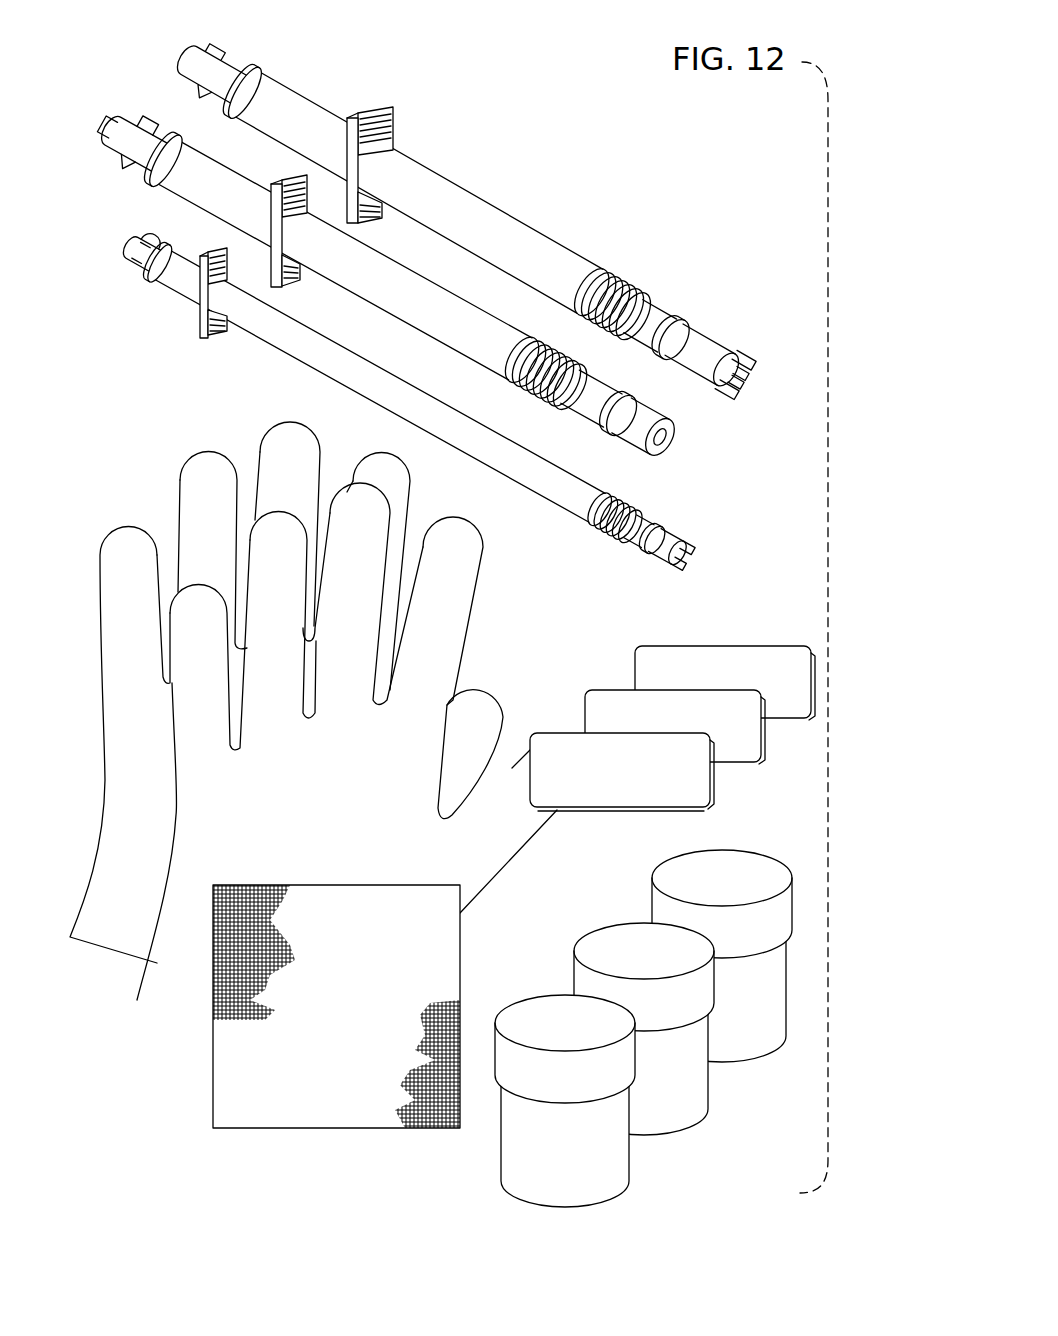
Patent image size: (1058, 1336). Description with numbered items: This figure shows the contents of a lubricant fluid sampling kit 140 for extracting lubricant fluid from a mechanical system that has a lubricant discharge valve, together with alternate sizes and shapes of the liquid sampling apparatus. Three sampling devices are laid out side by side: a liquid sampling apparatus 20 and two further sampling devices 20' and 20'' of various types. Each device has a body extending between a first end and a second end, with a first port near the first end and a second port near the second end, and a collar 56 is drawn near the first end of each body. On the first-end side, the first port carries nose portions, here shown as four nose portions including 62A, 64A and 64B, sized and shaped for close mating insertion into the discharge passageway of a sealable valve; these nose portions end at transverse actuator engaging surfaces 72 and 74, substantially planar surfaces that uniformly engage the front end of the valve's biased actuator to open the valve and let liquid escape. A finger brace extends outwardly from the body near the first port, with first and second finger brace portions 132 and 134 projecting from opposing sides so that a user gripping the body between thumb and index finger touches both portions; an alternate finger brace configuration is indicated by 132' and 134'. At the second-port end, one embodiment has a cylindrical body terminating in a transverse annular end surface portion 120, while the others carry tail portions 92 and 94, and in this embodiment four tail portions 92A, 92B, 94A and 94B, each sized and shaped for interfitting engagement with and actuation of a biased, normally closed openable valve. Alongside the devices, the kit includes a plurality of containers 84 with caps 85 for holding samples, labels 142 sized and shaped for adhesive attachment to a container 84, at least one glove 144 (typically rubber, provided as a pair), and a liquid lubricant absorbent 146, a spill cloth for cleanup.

The liquid sampling apparatus 20 is at (404, 400).
The liquid sampling apparatus (second type) 20' is at (383, 245).
The liquid sampling apparatus (third type) 20'' is at (457, 215).
The collar / hub 56 is at (217, 62).
The nose portion 62A is at (116, 160).
The nose portion 64A is at (118, 126).
The nose portion 64B is at (134, 110).
The transverse actuator engaging surface 72 is at (128, 263).
The transverse actuator engaging surface 74 is at (137, 241).
The container 84 is at (622, 1164).
The cap 85 is at (666, 877).
The tail portion 92 is at (685, 567).
The tail portion 92A is at (745, 387).
The tail portion 92B is at (758, 376).
The tail portion 94 is at (681, 542).
The tail portion 94A is at (756, 366).
The tail portion 94B is at (745, 354).
The transverse annular end surface portion 120 is at (662, 450).
The first finger brace portion 132 is at (323, 188).
The first finger brace portion (alternate configuration) 132' is at (199, 281).
The second finger brace portion 134 is at (353, 255).
The second finger brace portion (alternate configuration) 134' is at (232, 342).
The lubricant fluid sampling kit 140 is at (827, 458).
The label 142 is at (558, 744).
The glove 144 is at (397, 493).
The liquid lubricant absorbent 146 is at (460, 952).